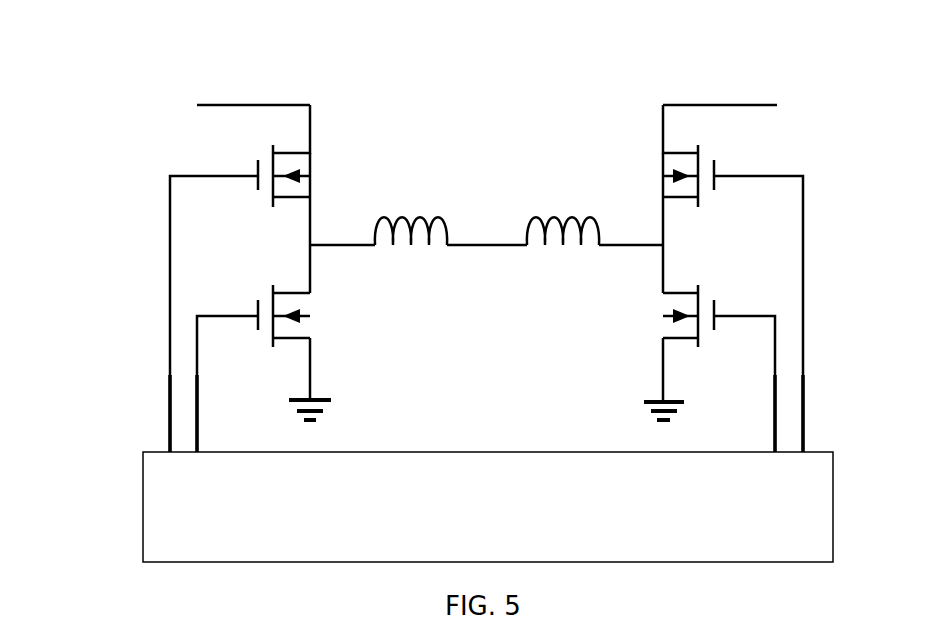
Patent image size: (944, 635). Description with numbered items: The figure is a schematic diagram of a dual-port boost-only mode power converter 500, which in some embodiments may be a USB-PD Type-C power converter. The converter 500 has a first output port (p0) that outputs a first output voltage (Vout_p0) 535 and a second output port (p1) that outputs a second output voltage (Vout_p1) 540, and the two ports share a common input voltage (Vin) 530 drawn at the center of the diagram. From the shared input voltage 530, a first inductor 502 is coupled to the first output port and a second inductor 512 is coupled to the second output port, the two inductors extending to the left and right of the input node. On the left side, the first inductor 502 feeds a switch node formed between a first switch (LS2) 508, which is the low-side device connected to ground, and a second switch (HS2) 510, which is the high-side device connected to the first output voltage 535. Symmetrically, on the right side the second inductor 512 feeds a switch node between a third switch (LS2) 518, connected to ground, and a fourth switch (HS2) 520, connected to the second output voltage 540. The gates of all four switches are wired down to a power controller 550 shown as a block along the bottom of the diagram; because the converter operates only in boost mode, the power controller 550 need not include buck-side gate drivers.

The dual-port boost-only mode power converter 500 is at (90, 60).
The first inductor 502 is at (426, 250).
The first switch (LS2) 508 is at (312, 292).
The second switch (HS2) 510 is at (312, 145).
The second inductor 512 is at (540, 250).
The third switch (LS2) 518 is at (661, 292).
The fourth switch (HS2) 520 is at (661, 150).
The input voltage (Vin) 530 is at (495, 212).
The first output voltage (Vout_p0) 535 is at (197, 106).
The second output voltage (Vout_p1) 540 is at (777, 106).
The power controller 550 is at (460, 551).